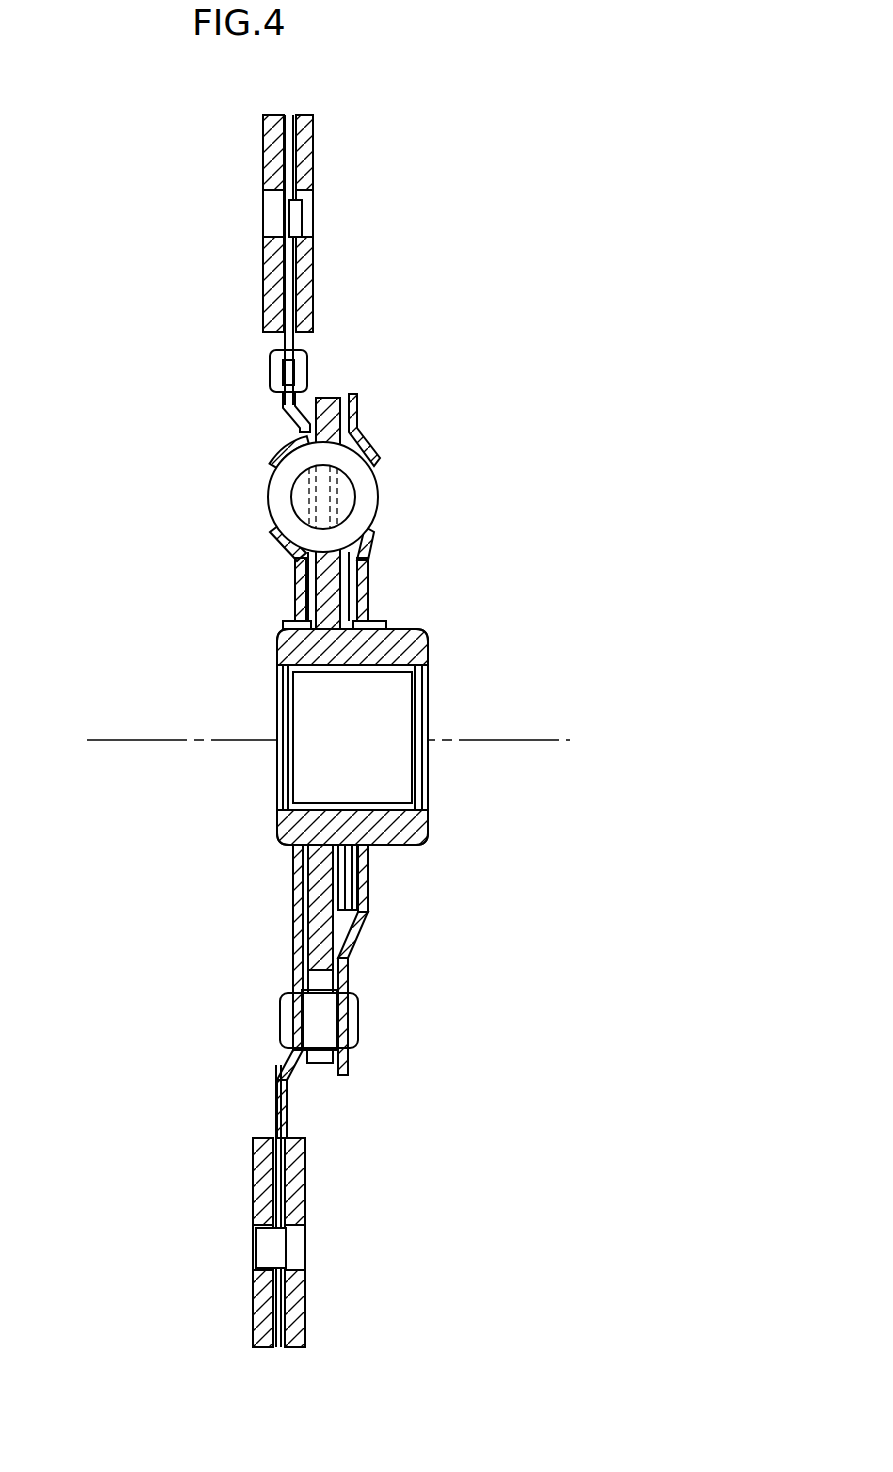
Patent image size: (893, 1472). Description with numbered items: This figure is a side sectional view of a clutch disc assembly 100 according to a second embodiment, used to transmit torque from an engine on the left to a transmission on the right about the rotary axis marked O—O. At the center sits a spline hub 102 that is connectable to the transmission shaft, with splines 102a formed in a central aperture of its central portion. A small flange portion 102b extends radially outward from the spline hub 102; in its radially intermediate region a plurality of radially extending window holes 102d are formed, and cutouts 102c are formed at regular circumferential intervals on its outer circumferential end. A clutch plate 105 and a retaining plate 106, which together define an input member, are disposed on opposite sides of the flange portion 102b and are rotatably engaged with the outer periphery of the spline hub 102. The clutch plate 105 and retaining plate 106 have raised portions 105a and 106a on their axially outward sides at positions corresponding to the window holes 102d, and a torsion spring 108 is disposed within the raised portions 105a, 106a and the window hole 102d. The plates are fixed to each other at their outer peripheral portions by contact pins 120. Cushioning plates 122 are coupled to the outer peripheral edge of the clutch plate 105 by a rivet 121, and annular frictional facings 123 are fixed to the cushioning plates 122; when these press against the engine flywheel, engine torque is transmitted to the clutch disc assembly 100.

The clutch disc assembly 100 is at (492, 400).
The spline hub 102 is at (425, 632).
The splines 102a is at (375, 674).
The flange portion 102b is at (325, 935).
The cutouts 102c is at (330, 1015).
The window holes 102d is at (332, 452).
The clutch plate 105 is at (295, 588).
The raised portions 105a is at (275, 447).
The retaining plate 106 is at (372, 596).
The raised portions 106a is at (370, 440).
The torsion spring 108 is at (281, 500).
The contact pins 120 is at (318, 1024).
The rivet 121 is at (272, 372).
The cushioning plates 122 is at (263, 335).
The frictional facings 123 is at (263, 268).